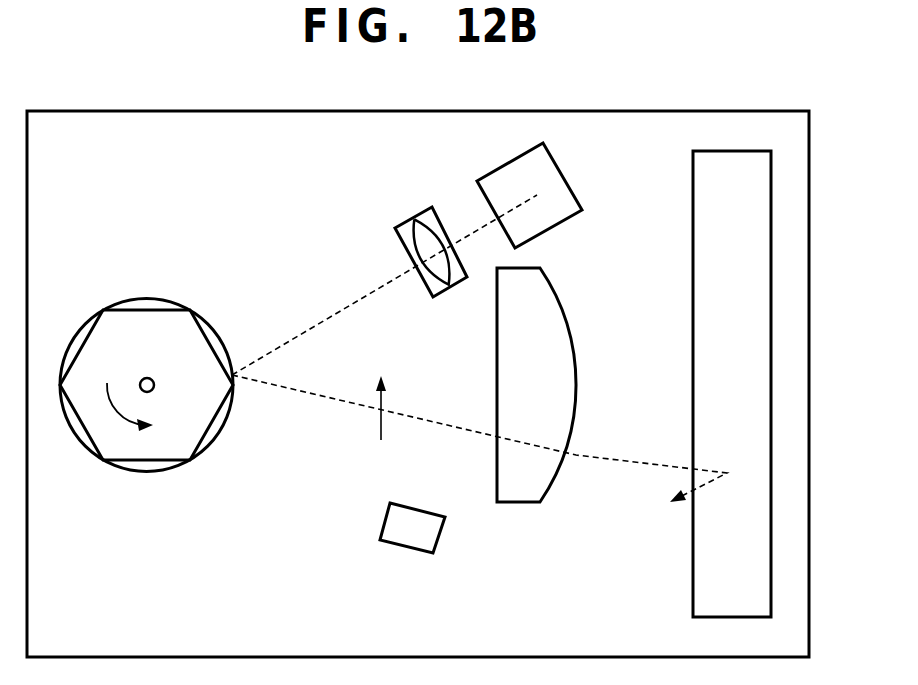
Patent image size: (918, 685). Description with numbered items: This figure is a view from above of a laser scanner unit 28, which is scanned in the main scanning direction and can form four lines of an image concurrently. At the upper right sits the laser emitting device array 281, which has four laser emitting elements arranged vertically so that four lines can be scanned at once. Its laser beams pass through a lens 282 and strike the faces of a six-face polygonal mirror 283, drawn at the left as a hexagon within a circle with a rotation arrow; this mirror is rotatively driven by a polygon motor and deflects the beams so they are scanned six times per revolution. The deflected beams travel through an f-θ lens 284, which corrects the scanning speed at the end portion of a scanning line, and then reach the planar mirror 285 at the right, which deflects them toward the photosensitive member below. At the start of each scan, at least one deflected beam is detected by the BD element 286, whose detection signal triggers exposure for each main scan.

The laser scanner unit 28 is at (99, 110).
The laser emitting device array 281 is at (509, 175).
The lens 282 is at (403, 225).
The polygonal mirror 283 is at (163, 320).
The f-θ lens 284 is at (531, 490).
The planar mirror 285 is at (701, 176).
The BD element 286 is at (407, 537).